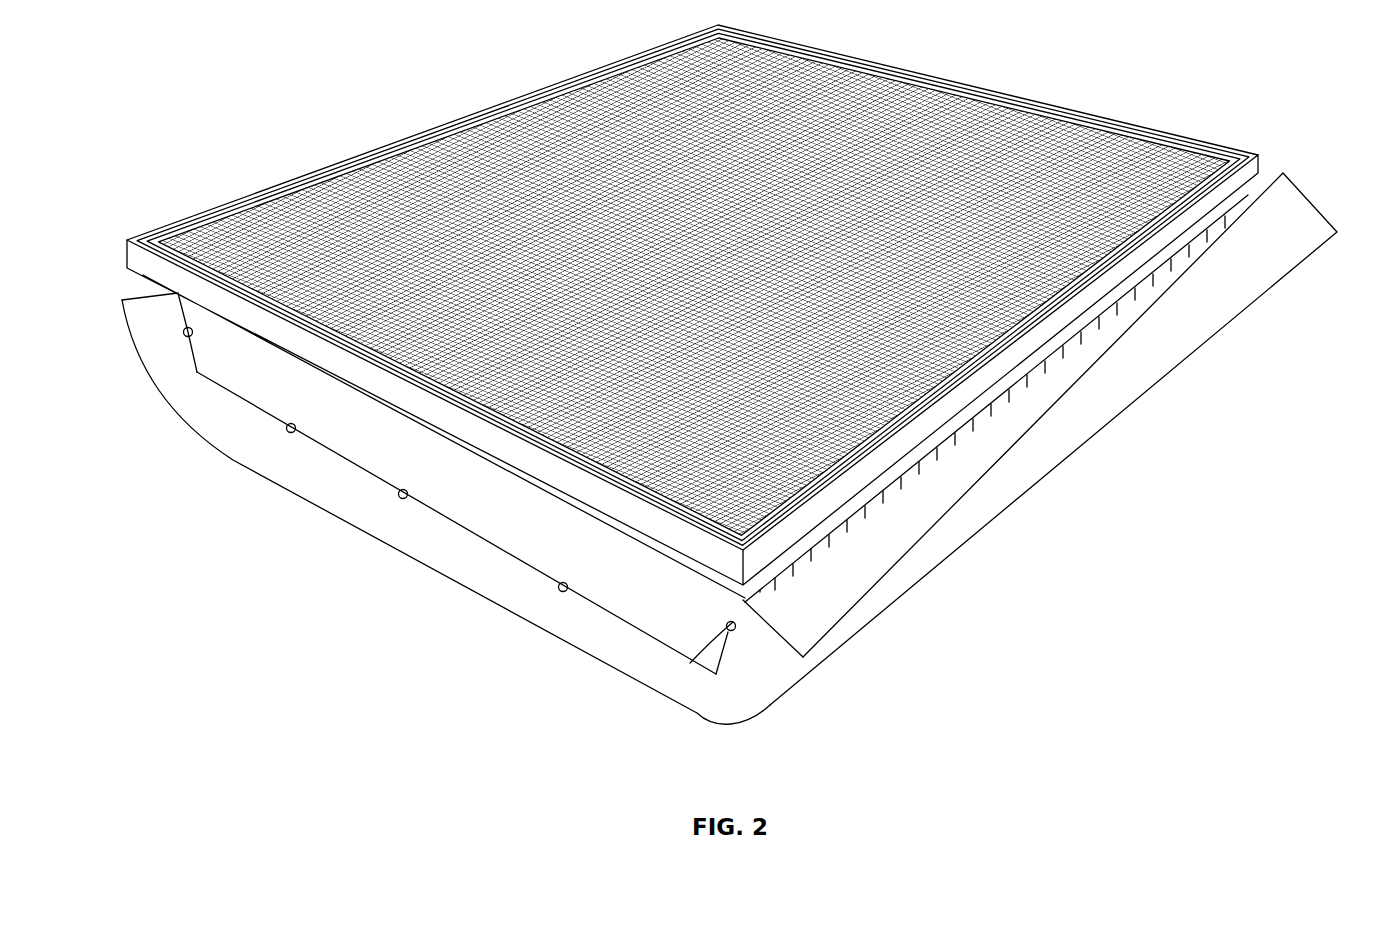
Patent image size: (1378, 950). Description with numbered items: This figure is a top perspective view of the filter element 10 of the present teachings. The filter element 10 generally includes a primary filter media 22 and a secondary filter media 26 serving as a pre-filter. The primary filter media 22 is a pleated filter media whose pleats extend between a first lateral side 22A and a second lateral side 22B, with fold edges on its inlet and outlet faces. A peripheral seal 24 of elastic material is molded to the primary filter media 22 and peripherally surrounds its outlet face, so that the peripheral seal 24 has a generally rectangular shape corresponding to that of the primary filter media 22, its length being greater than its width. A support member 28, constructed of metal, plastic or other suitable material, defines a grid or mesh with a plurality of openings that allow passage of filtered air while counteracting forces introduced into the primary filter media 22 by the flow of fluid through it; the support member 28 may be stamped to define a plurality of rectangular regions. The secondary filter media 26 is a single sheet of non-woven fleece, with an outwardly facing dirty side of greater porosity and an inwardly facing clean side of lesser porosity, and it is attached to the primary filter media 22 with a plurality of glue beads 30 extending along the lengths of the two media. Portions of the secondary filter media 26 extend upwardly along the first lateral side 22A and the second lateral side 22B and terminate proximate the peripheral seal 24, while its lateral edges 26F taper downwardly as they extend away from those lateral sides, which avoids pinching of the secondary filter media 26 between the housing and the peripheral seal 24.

The filter element 10 is at (1296, 100).
The primary filter media 22 is at (650, 578).
The first lateral side 22A is at (183, 322).
The second lateral side 22B is at (757, 577).
The peripheral seal 24 is at (820, 518).
The secondary filter media 26 is at (235, 464).
The lateral edges 26F is at (987, 475).
The support member 28 is at (965, 185).
The glue beads 30 is at (185, 335).